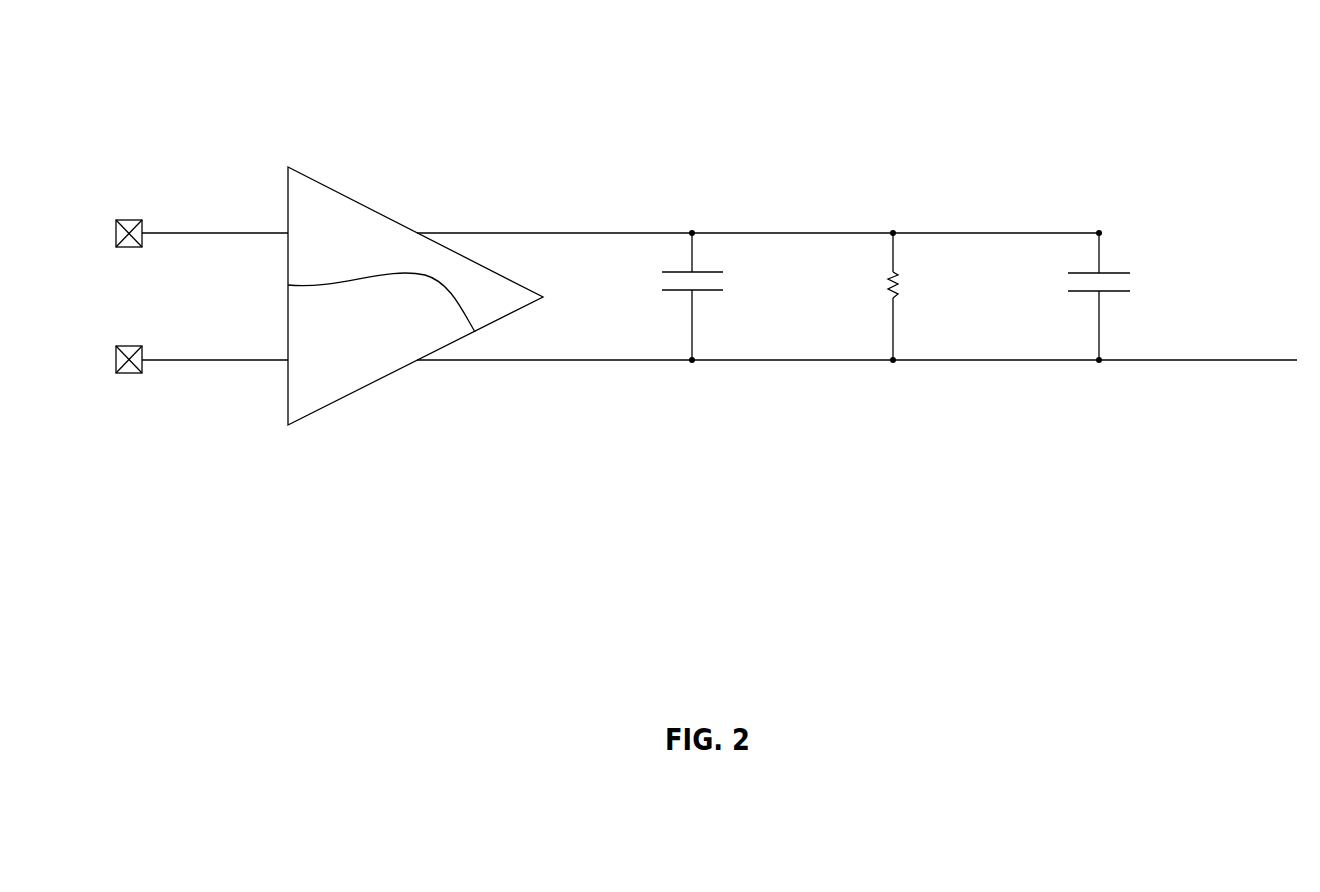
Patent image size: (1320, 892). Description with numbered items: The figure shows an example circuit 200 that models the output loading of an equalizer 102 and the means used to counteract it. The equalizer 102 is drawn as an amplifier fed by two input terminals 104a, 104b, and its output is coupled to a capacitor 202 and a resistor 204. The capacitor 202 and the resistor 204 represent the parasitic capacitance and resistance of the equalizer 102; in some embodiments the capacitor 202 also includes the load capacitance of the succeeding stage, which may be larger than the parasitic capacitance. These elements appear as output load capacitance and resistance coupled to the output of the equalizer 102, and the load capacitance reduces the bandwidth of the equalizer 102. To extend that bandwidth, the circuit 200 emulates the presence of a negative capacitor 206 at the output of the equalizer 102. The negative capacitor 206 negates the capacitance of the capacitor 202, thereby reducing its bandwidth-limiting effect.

The example circuit 200 is at (1265, 43).
The equalizer 102 is at (345, 196).
The first input terminal 104a is at (180, 233).
The second input terminal 104b is at (178, 360).
The capacitor 202 is at (665, 298).
The resistor 204 is at (882, 282).
The negative capacitor 206 is at (1070, 282).